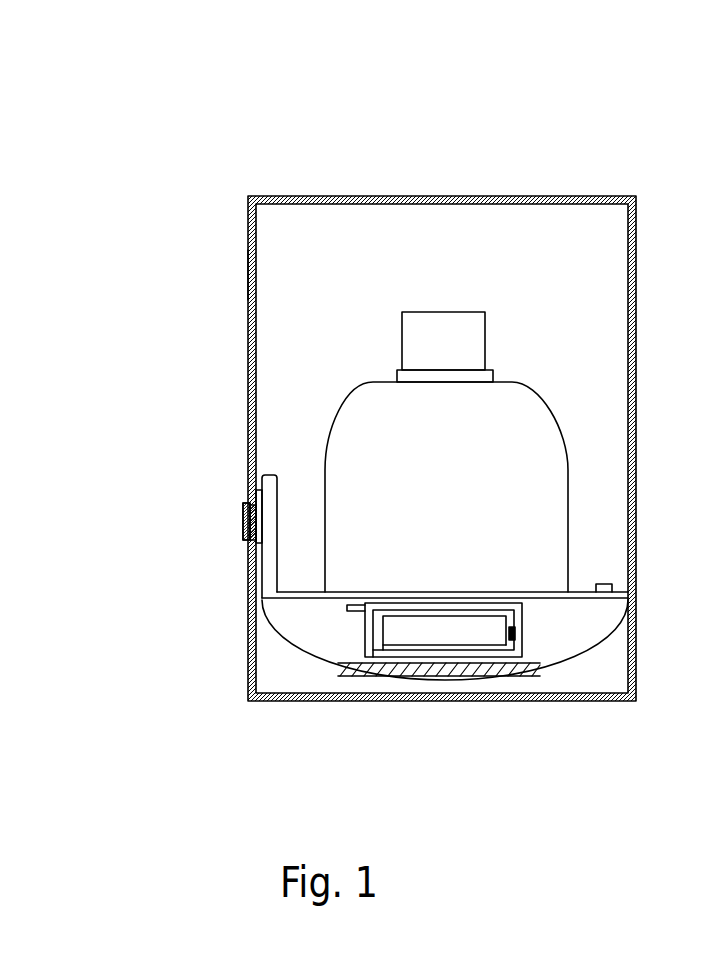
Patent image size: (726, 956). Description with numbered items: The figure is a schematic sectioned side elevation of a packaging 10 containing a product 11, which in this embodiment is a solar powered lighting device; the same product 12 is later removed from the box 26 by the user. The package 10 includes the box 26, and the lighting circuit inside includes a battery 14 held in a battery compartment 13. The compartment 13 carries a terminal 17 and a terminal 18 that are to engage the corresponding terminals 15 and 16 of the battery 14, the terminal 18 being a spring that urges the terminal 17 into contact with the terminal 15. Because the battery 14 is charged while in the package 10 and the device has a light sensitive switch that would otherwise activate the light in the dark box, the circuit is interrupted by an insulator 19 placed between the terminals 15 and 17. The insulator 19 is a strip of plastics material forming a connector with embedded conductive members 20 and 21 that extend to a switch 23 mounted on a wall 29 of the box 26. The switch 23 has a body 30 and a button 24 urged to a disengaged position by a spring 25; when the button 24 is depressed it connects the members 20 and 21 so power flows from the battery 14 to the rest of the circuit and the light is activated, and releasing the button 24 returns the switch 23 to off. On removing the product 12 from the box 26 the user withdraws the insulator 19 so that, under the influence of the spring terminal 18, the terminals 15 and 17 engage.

The packaging 10 is at (553, 172).
The product 11 is at (582, 266).
The product 12 is at (592, 395).
The battery compartment 13 is at (525, 638).
The battery 14 is at (442, 678).
The battery terminal 15 is at (390, 647).
The battery terminal 16 is at (508, 638).
The compartment terminal 17 is at (358, 575).
The spring terminal 18 is at (518, 636).
The insulator 19 is at (388, 596).
The conductive member 20 is at (255, 568).
The conductive member 21 is at (278, 490).
The switch 23 is at (214, 450).
The button 24 is at (243, 520).
The spring 25 is at (243, 503).
The box 26 is at (368, 197).
The wall 29 is at (247, 280).
The body 30 is at (247, 502).